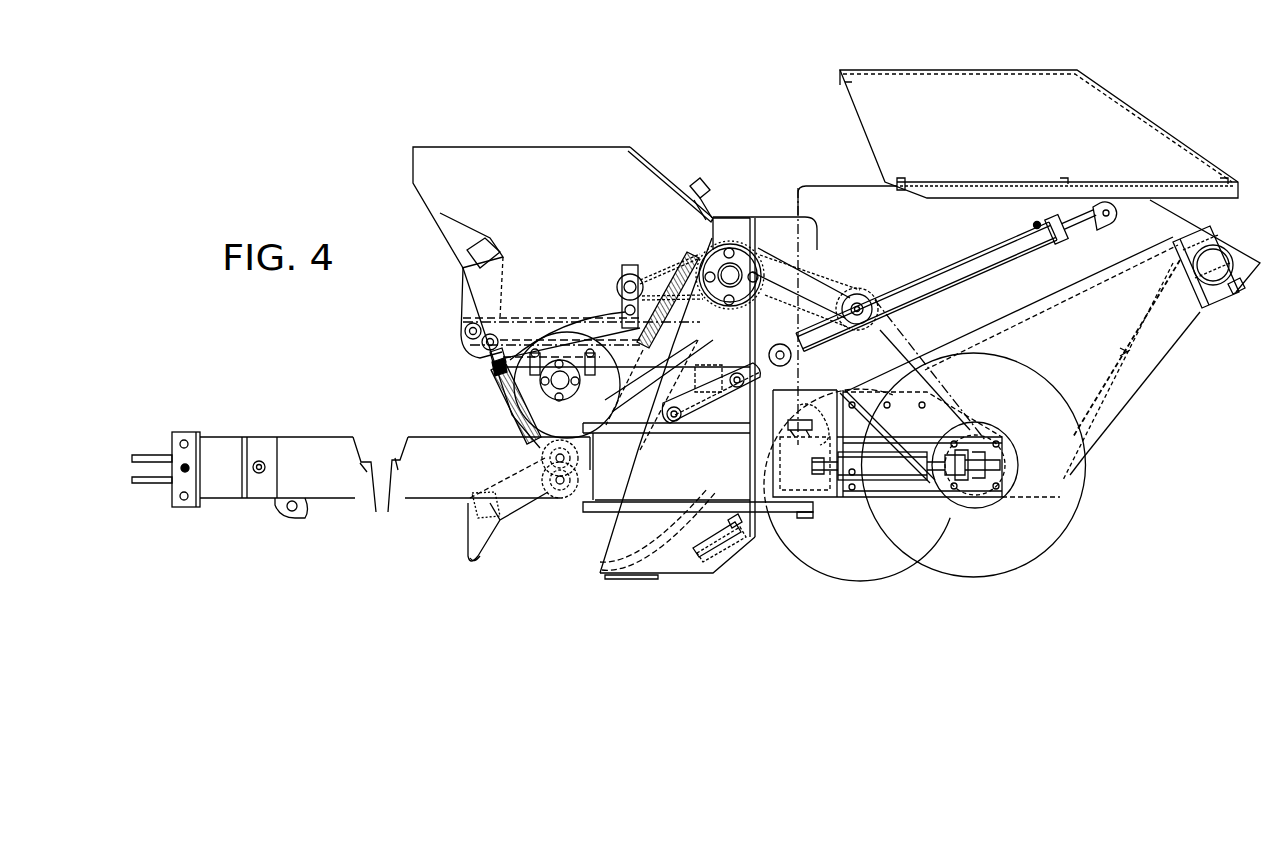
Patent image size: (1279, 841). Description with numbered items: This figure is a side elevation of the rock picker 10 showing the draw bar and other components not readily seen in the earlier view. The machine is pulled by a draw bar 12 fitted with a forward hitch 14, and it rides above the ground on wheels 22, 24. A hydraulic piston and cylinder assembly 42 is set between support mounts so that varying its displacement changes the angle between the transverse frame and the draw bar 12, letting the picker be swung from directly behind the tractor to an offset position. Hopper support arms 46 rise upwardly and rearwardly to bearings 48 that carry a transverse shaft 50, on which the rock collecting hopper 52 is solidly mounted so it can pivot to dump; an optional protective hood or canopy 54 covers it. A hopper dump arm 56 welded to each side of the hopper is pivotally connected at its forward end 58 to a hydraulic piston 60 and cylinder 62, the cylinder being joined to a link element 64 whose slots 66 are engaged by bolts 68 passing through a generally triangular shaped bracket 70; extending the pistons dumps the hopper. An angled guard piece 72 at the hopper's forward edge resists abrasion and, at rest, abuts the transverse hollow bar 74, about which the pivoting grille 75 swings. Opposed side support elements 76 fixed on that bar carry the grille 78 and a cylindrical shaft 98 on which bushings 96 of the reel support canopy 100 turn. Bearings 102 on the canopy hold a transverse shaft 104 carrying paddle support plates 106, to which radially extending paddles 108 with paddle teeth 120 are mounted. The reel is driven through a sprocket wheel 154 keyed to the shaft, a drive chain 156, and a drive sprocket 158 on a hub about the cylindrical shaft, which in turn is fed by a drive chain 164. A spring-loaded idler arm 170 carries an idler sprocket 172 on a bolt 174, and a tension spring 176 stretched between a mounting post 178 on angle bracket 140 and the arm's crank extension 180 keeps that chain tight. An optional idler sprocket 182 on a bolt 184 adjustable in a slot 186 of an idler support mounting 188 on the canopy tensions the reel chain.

The rock picker 10 is at (793, 138).
The draw bar 12 is at (355, 436).
The forward hitch 14 is at (150, 455).
The wheel 22 is at (1005, 559).
The wheel 24 is at (838, 544).
The hydraulic piston and cylinder assembly 42 is at (905, 478).
The hopper support arms 46 is at (1186, 318).
The bearings 48 is at (1232, 290).
The shaft 50 is at (1217, 260).
The rock collecting hopper 52 is at (1100, 425).
The protective hood or canopy 54 is at (1132, 118).
The hopper dump arm 56 is at (1147, 232).
The forward end of hopper dump arm 58 is at (1105, 226).
The hydraulic piston 60 is at (1062, 218).
The cylinder 62 is at (992, 272).
The link element 64 is at (778, 365).
The slots 66 is at (738, 418).
The bolts 68 is at (728, 378).
The triangular shaped bracket 70 is at (665, 452).
The angled guard piece 72 is at (818, 395).
The transverse hollow bar 74 is at (808, 443).
The grille 75 is at (590, 528).
The side support elements 76 is at (818, 257).
The grille 78 is at (705, 540).
The bushings 96 is at (740, 240).
The cylindrical shaft 98 is at (753, 258).
The reel support canopy 100 is at (637, 173).
The bearings 102 is at (492, 386).
The transverse shaft 104 is at (572, 390).
The paddle support plates 106 is at (498, 396).
The paddles 108 is at (467, 532).
The paddle teeth 120 is at (480, 556).
The angle bracket 140 is at (698, 470).
The sprocket wheel 154 is at (490, 362).
The drive chain 156 is at (588, 318).
The drive sprocket 158 is at (748, 296).
The drive chain 164 is at (898, 332).
The idler arm 170 is at (822, 290).
The idler sprocket 172 is at (856, 325).
The bolt 174 is at (866, 300).
The tension spring 176 is at (682, 260).
The mounting post 178 is at (587, 467).
The crank extension 180 is at (712, 238).
The idler sprocket 182 is at (618, 287).
The bolt 184 is at (640, 282).
The slot 186 is at (622, 311).
The idler support mounting 188 is at (626, 268).